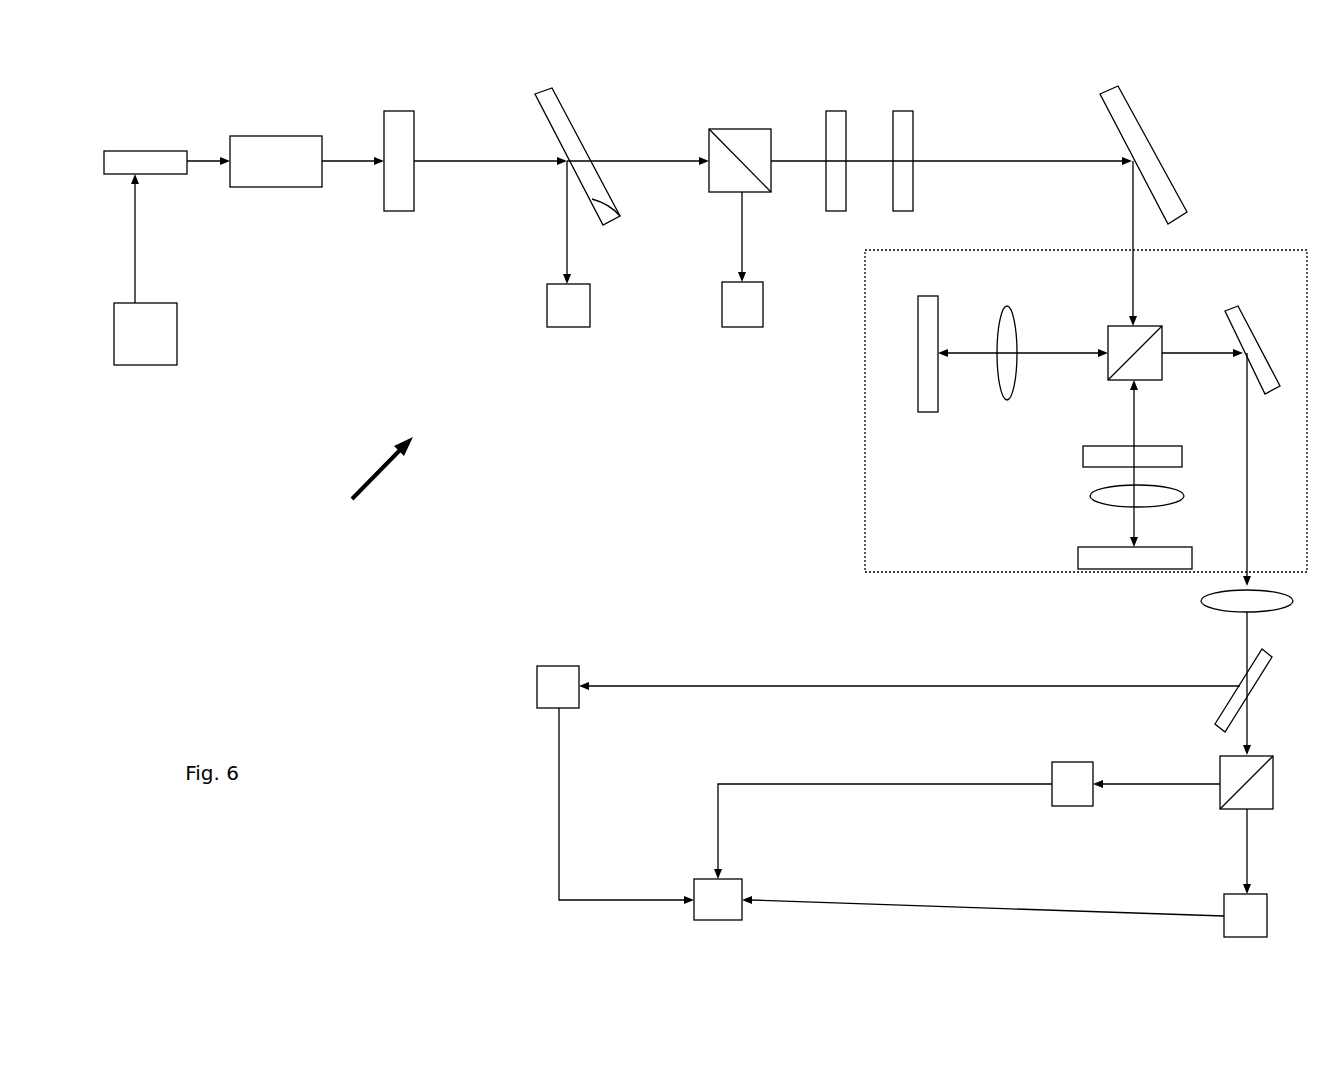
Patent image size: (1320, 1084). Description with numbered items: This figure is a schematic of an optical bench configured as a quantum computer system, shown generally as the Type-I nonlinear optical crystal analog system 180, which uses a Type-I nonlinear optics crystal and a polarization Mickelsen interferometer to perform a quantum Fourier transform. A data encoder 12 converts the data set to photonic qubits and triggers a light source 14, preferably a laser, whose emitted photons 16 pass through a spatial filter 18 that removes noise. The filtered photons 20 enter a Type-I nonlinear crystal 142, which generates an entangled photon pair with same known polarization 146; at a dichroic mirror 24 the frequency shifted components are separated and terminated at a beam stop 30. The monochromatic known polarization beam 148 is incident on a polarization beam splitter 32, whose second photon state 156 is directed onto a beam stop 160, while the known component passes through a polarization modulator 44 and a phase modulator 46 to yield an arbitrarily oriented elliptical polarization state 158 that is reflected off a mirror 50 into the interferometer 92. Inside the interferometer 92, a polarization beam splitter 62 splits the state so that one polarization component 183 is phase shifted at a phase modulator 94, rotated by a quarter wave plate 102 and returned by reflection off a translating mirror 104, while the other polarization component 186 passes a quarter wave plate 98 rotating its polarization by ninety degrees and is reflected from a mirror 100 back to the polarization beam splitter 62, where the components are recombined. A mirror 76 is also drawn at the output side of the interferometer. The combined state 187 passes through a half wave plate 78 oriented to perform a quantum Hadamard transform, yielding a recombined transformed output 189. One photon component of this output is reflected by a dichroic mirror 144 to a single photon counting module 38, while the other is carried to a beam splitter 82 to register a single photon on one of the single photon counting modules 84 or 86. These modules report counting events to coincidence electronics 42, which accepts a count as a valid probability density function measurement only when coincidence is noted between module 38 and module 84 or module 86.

The data encoder 12 is at (145, 269).
The light source 14 is at (145, 162).
The photons 16 is at (207, 163).
The spatial filter 18 is at (276, 161).
The photons 20 is at (352, 163).
The dichroic mirror 24 is at (607, 210).
The beam stop 30 is at (568, 244).
The polarization beam splitter 32 is at (740, 160).
The single photon counting module 38 is at (615, 785).
The coincidence electronics 42 is at (718, 899).
The polarization modulator 44 is at (841, 174).
The phase modulator 46 is at (905, 174).
The mirror 50 is at (1143, 155).
The polarization beam splitter 62 is at (1135, 353).
The mirror 76 is at (1252, 339).
The half wave plate 78 is at (1202, 607).
The beam splitter 82 is at (1183, 825).
The single photon counting module 84 is at (903, 820).
The single photon counting module 86 is at (1004, 915).
The interferometer 92 is at (857, 438).
The phase modulator 94 is at (1236, 469).
The quarter wave plate 98 is at (1004, 334).
The mirror 100 is at (986, 354).
The quarter wave plate 102 is at (1113, 497).
The translating mirror 104 is at (1135, 576).
The Type-I nonlinear crystal 142 is at (403, 220).
The dichroic mirror 144 is at (938, 690).
The entangled photon pair with same known polarization 146 is at (443, 170).
The monochromatic known polarization beam 148 is at (638, 160).
The second photon state 156 is at (742, 220).
The arbitrarily oriented elliptical polarization state 158 is at (967, 157).
The beam stop 160 is at (742, 304).
The Type-I nonlinear optical crystal analog system 180 is at (356, 486).
The polarization component 183 is at (1130, 425).
The polarization component 186 is at (1059, 353).
The combined state 187 is at (1213, 352).
The recombined transformed output 189 is at (1245, 657).